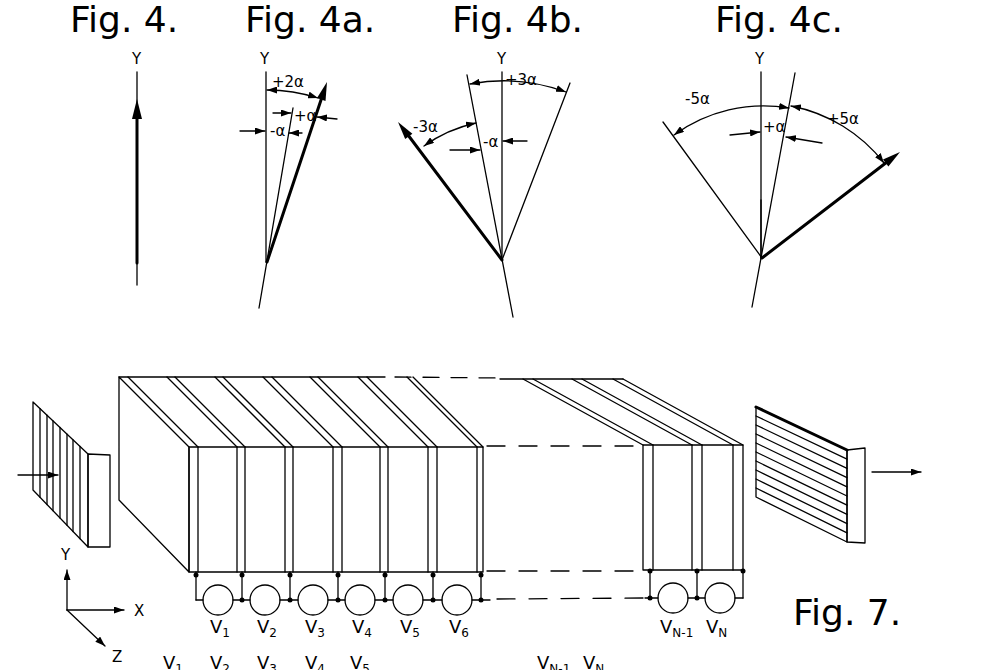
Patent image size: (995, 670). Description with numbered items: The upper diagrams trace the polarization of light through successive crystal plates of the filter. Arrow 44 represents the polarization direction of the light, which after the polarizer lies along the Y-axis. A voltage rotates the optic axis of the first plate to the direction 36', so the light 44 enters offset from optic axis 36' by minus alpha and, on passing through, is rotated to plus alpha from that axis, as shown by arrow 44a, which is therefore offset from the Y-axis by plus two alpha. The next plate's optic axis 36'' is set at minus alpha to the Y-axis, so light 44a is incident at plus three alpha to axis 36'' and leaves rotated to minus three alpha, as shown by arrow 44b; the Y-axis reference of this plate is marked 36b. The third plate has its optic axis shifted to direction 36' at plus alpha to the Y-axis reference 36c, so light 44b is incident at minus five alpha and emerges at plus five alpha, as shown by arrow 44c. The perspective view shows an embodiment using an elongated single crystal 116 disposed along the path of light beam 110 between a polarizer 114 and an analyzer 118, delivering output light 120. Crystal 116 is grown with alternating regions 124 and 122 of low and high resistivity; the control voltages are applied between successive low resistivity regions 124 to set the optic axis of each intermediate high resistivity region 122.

In FIG. 4, the polarization direction arrow 44 is at (135, 172).
In FIG. 4A, the light leaving first crystal plate 44a is at (289, 193).
In FIG. 4B, the light leaving first crystal plate 44a is at (535, 178).
In FIG. 4B, the light leaving second crystal plate 44b is at (447, 189).
In FIG. 4C, the light leaving second crystal plate 44b is at (703, 179).
In FIG. 4C, the light leaving third crystal plate 44c is at (828, 207).
In FIG. 4A, the rotated optic axis direction 36' is at (255, 208).
In FIG. 4C, the rotated optic axis direction 36' is at (800, 187).
In FIG. 4B, the second plate optic axis 36'' is at (461, 193).
In FIG. 4A, the optic axis of second crystal plate 36b is at (265, 212).
In FIG. 4B, the optic axis of second crystal plate 36b is at (503, 205).
In FIG. 4C, the optic axis of third crystal plate 36c is at (760, 216).
In FIG. 7, the light beam 110 is at (26, 478).
In FIG. 7, the polarizer 114 is at (57, 407).
In FIG. 7, the elongated single crystal 116 is at (526, 376).
In FIG. 7, the analyzer 118 is at (798, 423).
In FIG. 7, the output light beam 120 is at (896, 470).
In FIG. 7, the high resistivity regions 122 is at (377, 383).
In FIG. 7, the low resistivity regions 124 is at (217, 380).